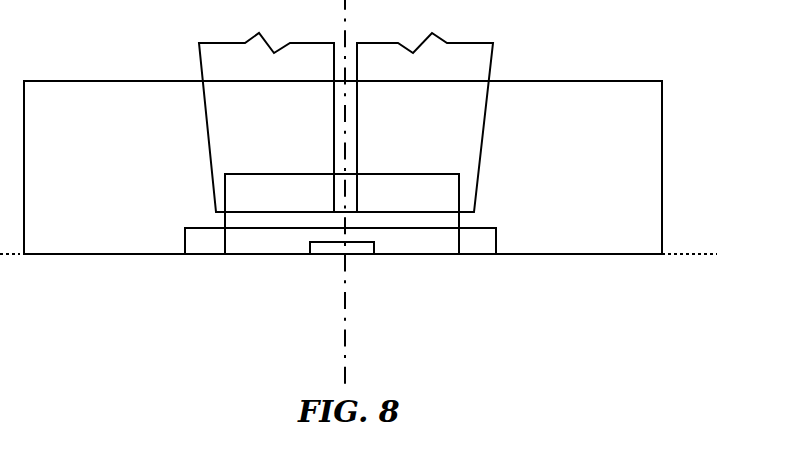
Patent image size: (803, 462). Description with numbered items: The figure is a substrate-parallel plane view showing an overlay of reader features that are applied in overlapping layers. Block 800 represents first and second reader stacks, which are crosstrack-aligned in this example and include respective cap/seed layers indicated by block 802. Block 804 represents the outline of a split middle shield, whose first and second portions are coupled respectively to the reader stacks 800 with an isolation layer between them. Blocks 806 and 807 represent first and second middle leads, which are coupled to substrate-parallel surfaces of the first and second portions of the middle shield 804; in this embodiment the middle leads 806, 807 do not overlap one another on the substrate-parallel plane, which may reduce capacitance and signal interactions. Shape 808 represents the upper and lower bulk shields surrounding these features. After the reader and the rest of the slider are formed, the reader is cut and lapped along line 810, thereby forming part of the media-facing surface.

The reader stacks 800 is at (315, 255).
The cap/seed layers 802 is at (496, 237).
The split middle shield 804 is at (225, 217).
The first middle lead 806 is at (483, 147).
The second middle lead 807 is at (208, 153).
The upper and lower bulk shields 808 is at (662, 132).
The lapping line 810 is at (690, 257).